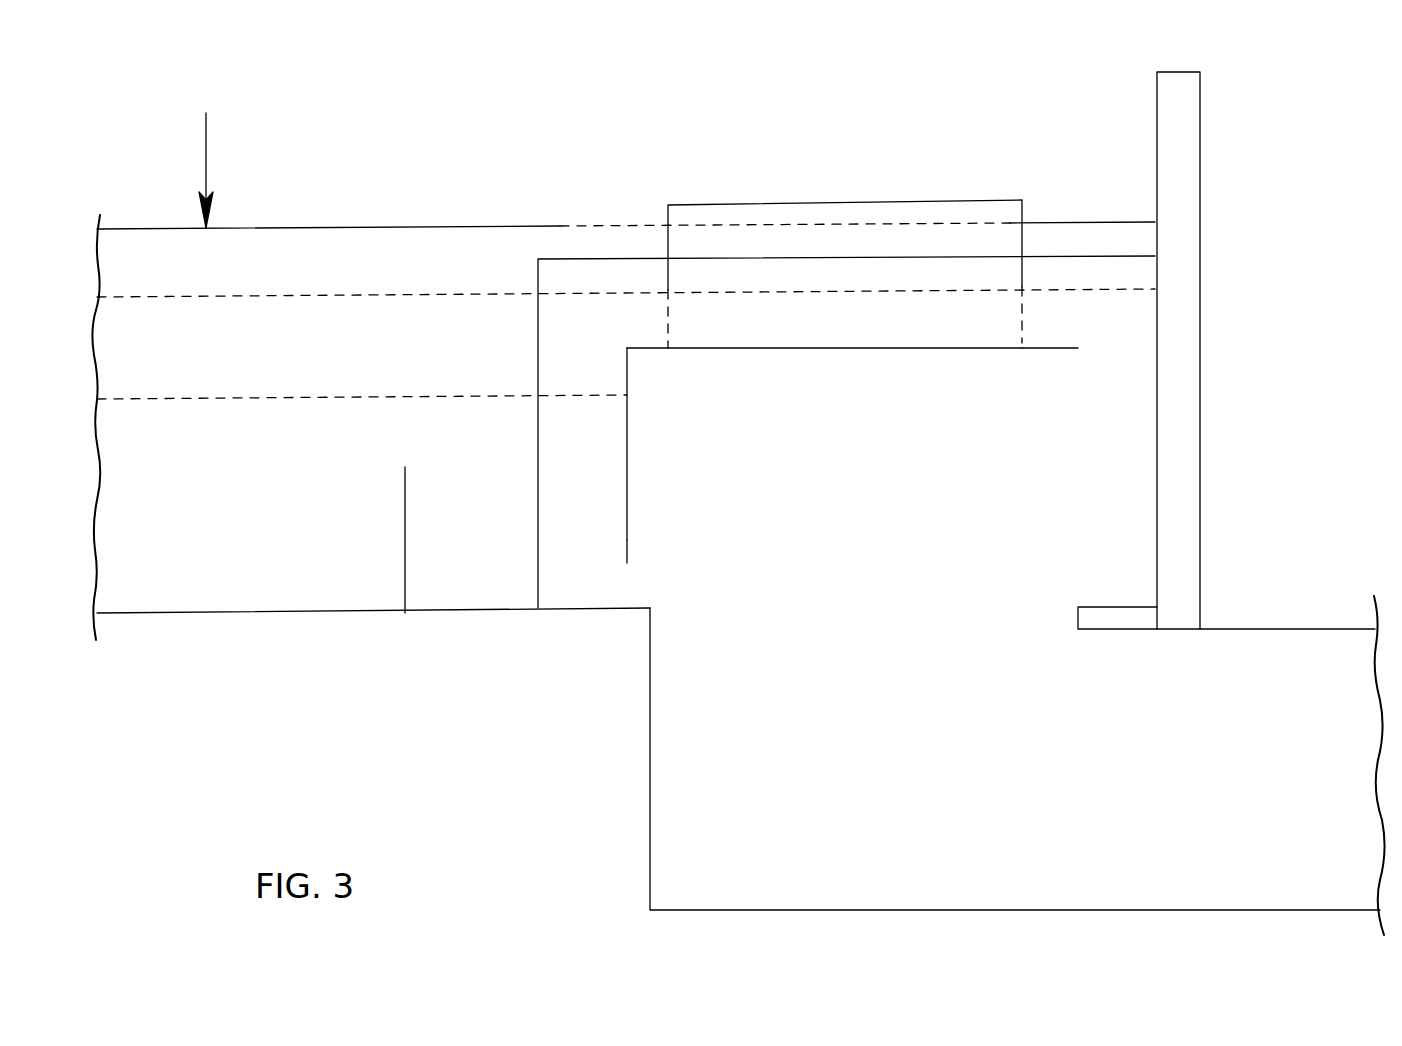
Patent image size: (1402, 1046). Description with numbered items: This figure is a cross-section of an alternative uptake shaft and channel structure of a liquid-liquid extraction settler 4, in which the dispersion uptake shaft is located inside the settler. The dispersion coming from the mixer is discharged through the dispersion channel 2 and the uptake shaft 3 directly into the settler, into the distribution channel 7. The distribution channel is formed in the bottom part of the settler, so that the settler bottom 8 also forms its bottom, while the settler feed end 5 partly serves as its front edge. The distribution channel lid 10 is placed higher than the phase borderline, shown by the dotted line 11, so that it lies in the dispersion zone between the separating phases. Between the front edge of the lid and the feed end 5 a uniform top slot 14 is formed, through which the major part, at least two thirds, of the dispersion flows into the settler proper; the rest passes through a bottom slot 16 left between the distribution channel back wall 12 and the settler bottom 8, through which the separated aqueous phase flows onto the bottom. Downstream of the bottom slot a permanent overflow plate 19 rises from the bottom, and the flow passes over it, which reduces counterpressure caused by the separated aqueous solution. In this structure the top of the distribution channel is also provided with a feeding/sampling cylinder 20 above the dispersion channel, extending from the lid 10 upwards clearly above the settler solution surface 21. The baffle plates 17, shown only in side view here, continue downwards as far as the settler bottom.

The dispersion channel 2 is at (1277, 648).
The uptake shaft 3 is at (660, 778).
The settler 4 is at (202, 141).
The settler feed end 5 is at (1200, 157).
The distribution channel 7 is at (782, 368).
The settler bottom 8 is at (138, 615).
The distribution channel lid 10 is at (920, 349).
The phase borderline 11 is at (149, 401).
The distribution channel back wall 12 is at (627, 475).
The top slot 14 is at (1105, 345).
The bottom slot 16 is at (627, 585).
The baffle plates 17 is at (562, 258).
The overflow plate 19 is at (405, 547).
The feeding/sampling cylinder 20 is at (920, 200).
The settler solution surface 21 is at (351, 293).